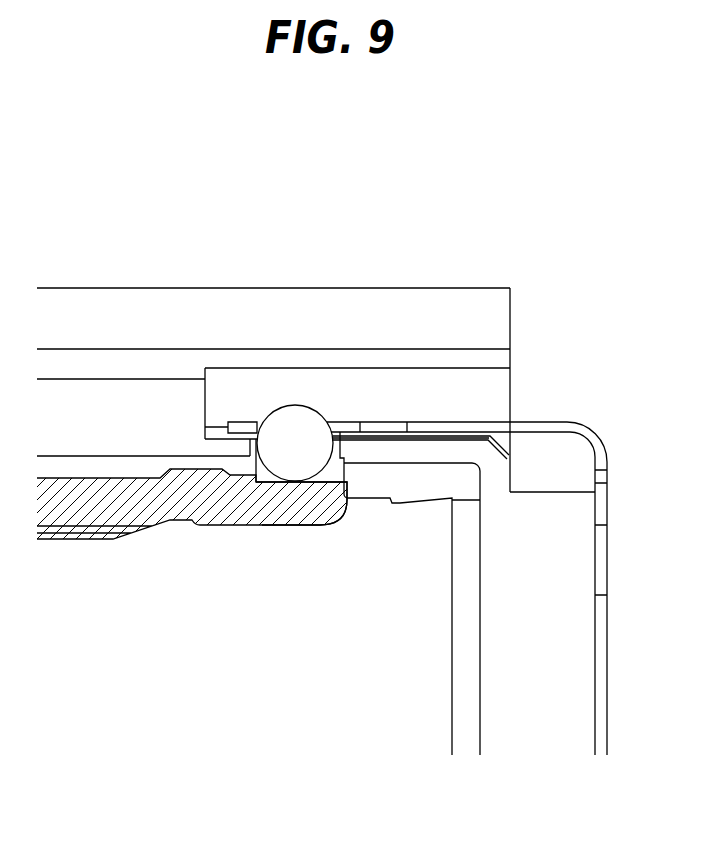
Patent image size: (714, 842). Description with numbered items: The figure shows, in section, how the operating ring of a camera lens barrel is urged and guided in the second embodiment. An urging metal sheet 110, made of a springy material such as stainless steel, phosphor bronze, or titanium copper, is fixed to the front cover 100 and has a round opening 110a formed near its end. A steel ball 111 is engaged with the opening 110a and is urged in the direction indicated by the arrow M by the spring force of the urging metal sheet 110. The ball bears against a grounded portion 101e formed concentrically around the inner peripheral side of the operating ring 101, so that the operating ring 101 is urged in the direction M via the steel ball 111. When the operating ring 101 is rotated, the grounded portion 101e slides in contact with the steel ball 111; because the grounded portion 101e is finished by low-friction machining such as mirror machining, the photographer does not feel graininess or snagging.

The front cover 100 is at (493, 558).
The operating ring 101 is at (82, 488).
The grounded portion 101e is at (262, 482).
The urging metal sheet 110 is at (596, 437).
The opening 110a is at (328, 422).
The steel ball 111 is at (285, 422).
The urging direction M is at (308, 430).